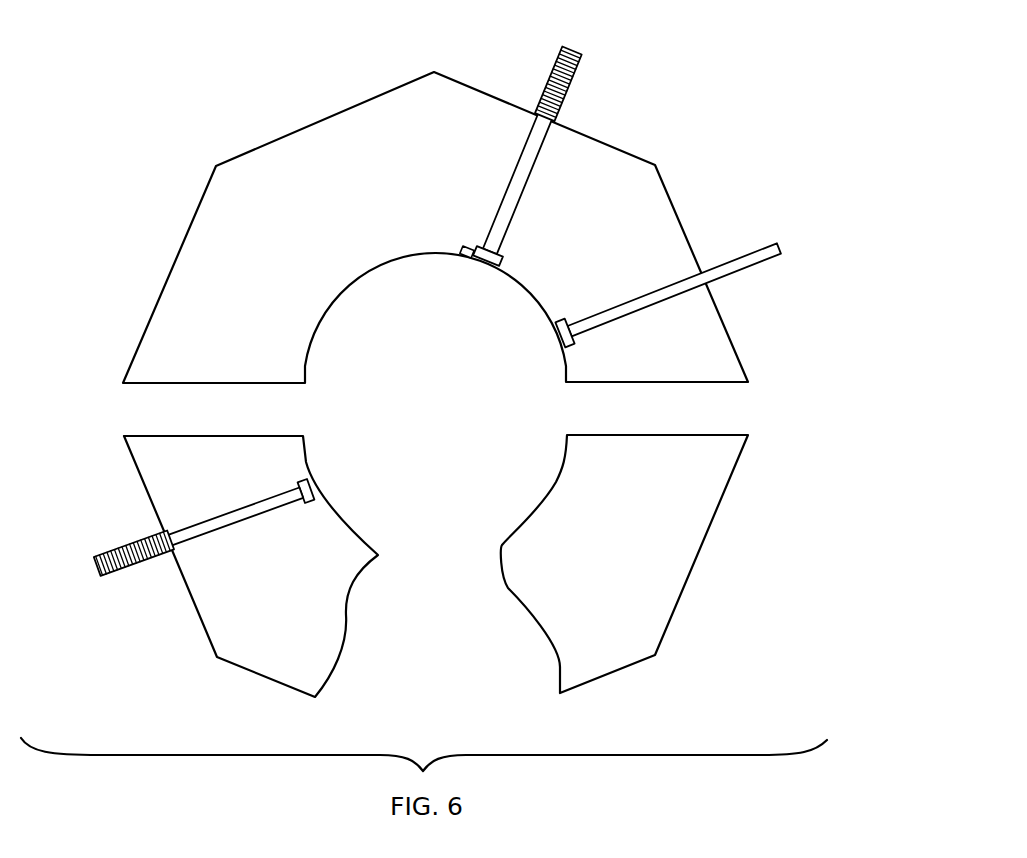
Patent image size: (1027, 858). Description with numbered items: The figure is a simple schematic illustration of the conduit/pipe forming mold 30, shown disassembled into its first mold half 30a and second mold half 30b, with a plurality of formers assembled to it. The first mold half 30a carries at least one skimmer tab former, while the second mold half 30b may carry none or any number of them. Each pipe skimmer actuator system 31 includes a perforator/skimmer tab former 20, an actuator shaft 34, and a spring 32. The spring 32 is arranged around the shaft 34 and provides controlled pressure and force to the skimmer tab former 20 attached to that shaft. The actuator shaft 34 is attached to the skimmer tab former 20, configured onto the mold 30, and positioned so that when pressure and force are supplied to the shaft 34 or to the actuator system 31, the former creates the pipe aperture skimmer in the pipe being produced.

The perforator/skimmer tab former 20 is at (462, 258).
The perforator/skimmer pipe production mold 30 is at (434, 383).
The first mold half 30a is at (587, 148).
The second mold half 30b is at (236, 641).
The pipe skimmer actuator system 31 is at (280, 522).
The spring 32 is at (128, 572).
The actuator shaft 34 is at (371, 325).